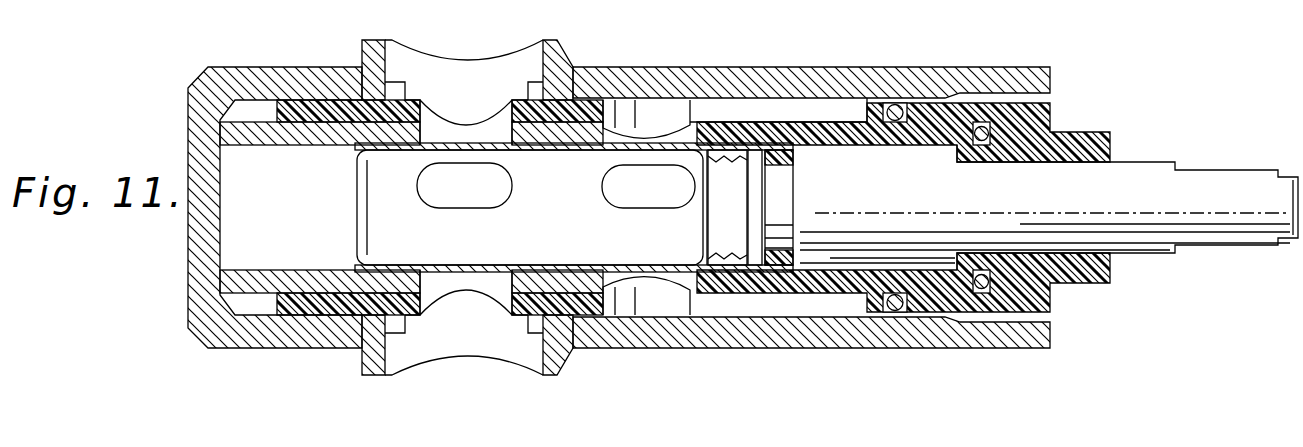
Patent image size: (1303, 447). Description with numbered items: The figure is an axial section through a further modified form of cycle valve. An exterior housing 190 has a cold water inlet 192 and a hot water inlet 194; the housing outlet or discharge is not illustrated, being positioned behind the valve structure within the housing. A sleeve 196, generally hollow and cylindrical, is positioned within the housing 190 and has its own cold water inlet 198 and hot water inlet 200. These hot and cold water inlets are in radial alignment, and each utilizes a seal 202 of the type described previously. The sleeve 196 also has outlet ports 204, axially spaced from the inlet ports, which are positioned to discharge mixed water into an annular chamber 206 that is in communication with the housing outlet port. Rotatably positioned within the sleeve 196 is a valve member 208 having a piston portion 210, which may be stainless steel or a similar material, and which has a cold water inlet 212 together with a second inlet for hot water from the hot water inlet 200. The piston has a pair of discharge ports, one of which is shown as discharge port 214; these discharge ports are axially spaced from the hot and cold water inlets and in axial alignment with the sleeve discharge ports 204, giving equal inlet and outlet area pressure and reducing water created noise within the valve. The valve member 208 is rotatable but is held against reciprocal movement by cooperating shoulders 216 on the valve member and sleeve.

The exterior housing 190 is at (752, 42).
The cold water inlet 192 is at (521, 58).
The hot water inlet 194 is at (420, 352).
The sleeve 196 is at (953, 100).
The cold water inlet 198 is at (452, 125).
The hot water inlet 200 is at (450, 285).
The seal 202 is at (353, 100).
The outlet ports 204 is at (693, 130).
The annular chamber 206 is at (828, 105).
The valve member 208 is at (850, 250).
The piston portion 210 is at (551, 146).
The cold water inlet 212 is at (453, 200).
The discharge port 214 is at (612, 193).
The cooperating shoulders 216 is at (952, 247).